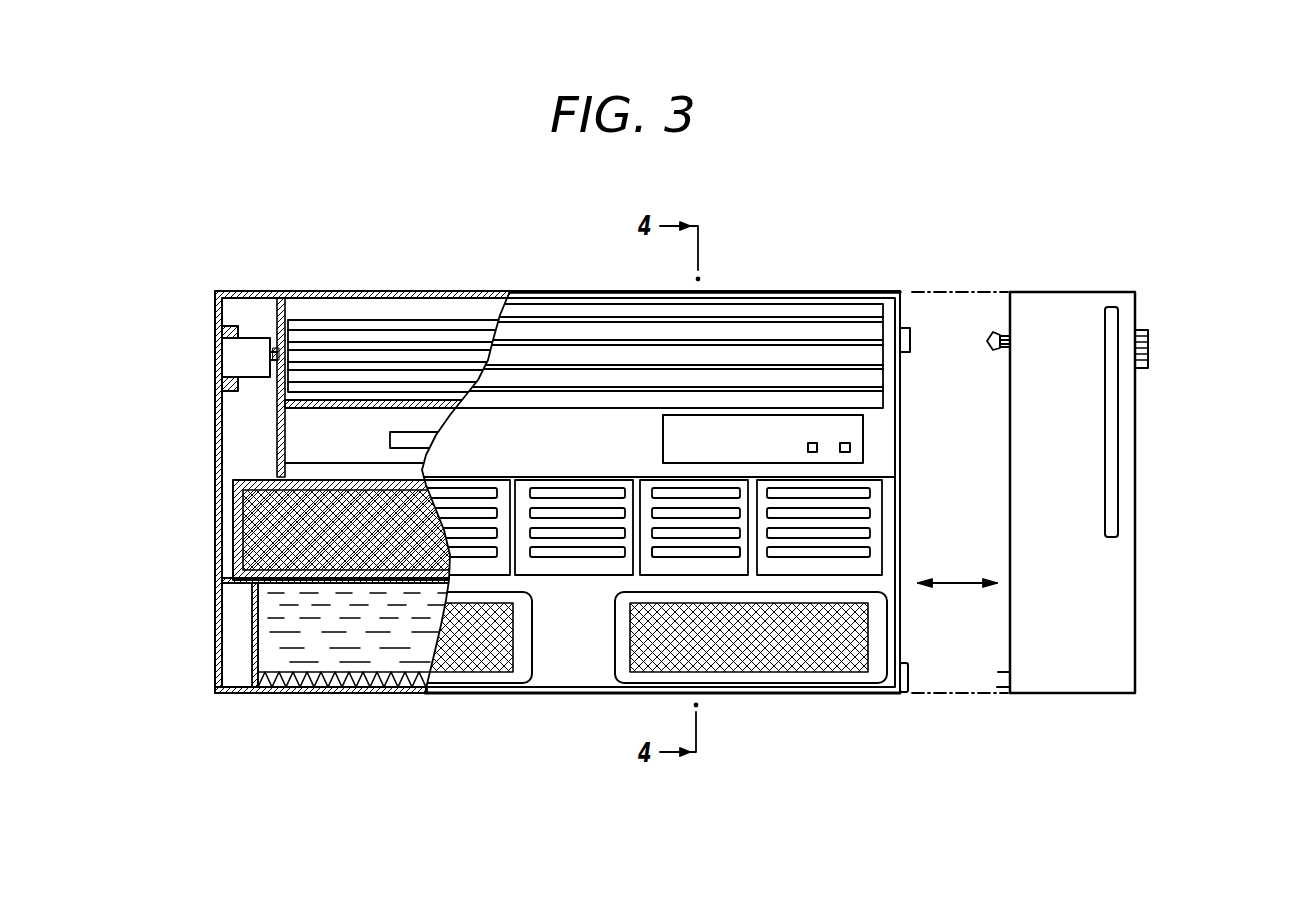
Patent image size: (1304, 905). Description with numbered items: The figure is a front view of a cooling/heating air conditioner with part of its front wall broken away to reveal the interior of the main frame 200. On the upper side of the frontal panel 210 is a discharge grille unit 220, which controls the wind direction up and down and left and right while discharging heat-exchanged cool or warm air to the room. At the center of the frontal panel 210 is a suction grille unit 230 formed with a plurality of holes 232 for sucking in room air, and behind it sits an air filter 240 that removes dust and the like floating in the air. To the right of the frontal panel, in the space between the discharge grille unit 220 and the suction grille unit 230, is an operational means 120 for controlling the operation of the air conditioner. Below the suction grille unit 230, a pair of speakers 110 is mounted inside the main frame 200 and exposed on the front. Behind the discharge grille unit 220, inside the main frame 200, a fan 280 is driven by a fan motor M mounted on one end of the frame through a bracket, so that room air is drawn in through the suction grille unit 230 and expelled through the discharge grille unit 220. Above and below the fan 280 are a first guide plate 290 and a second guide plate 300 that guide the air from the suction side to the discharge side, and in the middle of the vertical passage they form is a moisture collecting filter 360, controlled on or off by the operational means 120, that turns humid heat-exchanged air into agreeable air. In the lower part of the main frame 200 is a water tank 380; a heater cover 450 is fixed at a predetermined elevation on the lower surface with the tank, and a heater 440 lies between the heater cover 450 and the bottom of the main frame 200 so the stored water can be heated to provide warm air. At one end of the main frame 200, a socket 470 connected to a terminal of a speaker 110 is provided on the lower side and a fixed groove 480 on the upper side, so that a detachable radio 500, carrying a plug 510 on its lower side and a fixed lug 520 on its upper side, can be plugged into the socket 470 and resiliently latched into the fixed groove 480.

The main frame 200 is at (258, 272).
The first guide plate 290 is at (297, 310).
The motor M is at (232, 350).
The fan 280 is at (440, 322).
The moisture collecting filter 360 is at (297, 428).
The second guide plate 300 is at (284, 452).
The frontal panel 210 is at (562, 300).
The discharge grille unit 220 is at (807, 318).
The operational means 120 is at (863, 437).
The suction grille unit 230 is at (875, 540).
The holes 232 is at (727, 552).
The speakers 110 is at (637, 668).
The air filter 240 is at (233, 527).
The water tank 380 is at (280, 620).
The heater cover 450 is at (268, 662).
The heater 440 is at (327, 697).
The fixed groove 480 is at (912, 330).
The socket 470 is at (908, 692).
The fixed lug 520 is at (992, 330).
The plug 510 is at (1000, 693).
The detachable radio 500 is at (1140, 500).